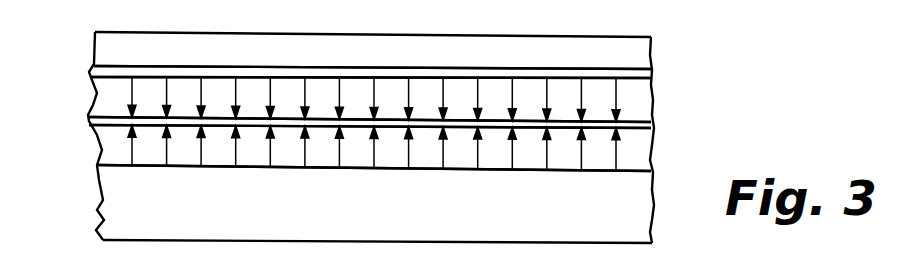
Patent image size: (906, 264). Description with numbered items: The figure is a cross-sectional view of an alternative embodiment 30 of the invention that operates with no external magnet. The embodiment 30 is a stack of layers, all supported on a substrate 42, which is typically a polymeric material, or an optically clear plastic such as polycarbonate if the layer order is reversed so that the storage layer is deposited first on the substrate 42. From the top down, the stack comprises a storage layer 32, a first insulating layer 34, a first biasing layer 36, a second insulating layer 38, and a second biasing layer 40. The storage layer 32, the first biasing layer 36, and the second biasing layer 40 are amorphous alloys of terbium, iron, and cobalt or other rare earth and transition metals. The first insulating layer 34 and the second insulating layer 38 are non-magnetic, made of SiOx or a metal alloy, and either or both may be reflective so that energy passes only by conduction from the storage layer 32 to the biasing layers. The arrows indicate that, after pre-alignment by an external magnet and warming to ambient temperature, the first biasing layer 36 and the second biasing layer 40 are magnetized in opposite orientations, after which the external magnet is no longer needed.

The alternative embodiment 30 is at (78, 114).
The storage layer 32 is at (632, 52).
The first insulating layer 34 is at (638, 75).
The first biasing layer 36 is at (636, 106).
The second insulating layer 38 is at (638, 125).
The second biasing layer 40 is at (638, 143).
The substrate 42 is at (630, 198).